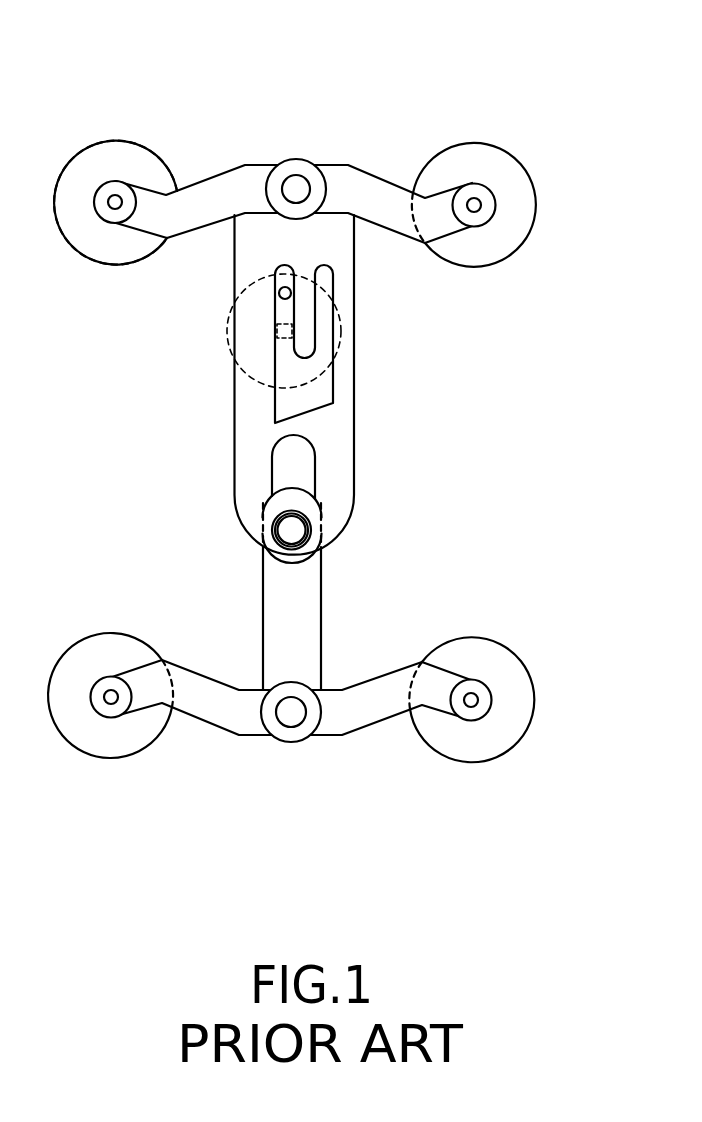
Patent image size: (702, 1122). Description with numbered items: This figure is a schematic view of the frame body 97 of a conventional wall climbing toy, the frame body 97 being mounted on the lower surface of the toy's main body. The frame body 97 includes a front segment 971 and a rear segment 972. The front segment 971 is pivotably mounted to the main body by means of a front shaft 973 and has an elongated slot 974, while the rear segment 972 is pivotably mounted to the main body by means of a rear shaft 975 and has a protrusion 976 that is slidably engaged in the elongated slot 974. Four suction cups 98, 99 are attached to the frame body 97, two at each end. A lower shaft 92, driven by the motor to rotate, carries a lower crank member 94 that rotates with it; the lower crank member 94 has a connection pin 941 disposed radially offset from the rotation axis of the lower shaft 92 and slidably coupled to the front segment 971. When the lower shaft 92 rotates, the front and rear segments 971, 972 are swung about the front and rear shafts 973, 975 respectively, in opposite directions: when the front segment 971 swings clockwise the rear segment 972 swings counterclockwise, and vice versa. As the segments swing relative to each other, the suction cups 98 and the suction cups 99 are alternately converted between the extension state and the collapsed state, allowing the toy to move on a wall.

The frame body 97 is at (296, 424).
The front segment 971 is at (370, 402).
The rear segment 972 is at (345, 617).
The front shaft 973 is at (296, 186).
The elongated slot 974 is at (300, 463).
The rear shaft 975 is at (291, 714).
The protrusion 976 is at (297, 530).
The lower shaft 92 is at (292, 331).
The lower crank member 94 is at (335, 347).
The connection pin 941 is at (291, 293).
The suction cup 98 is at (115, 140).
The suction cup 99 is at (514, 150).